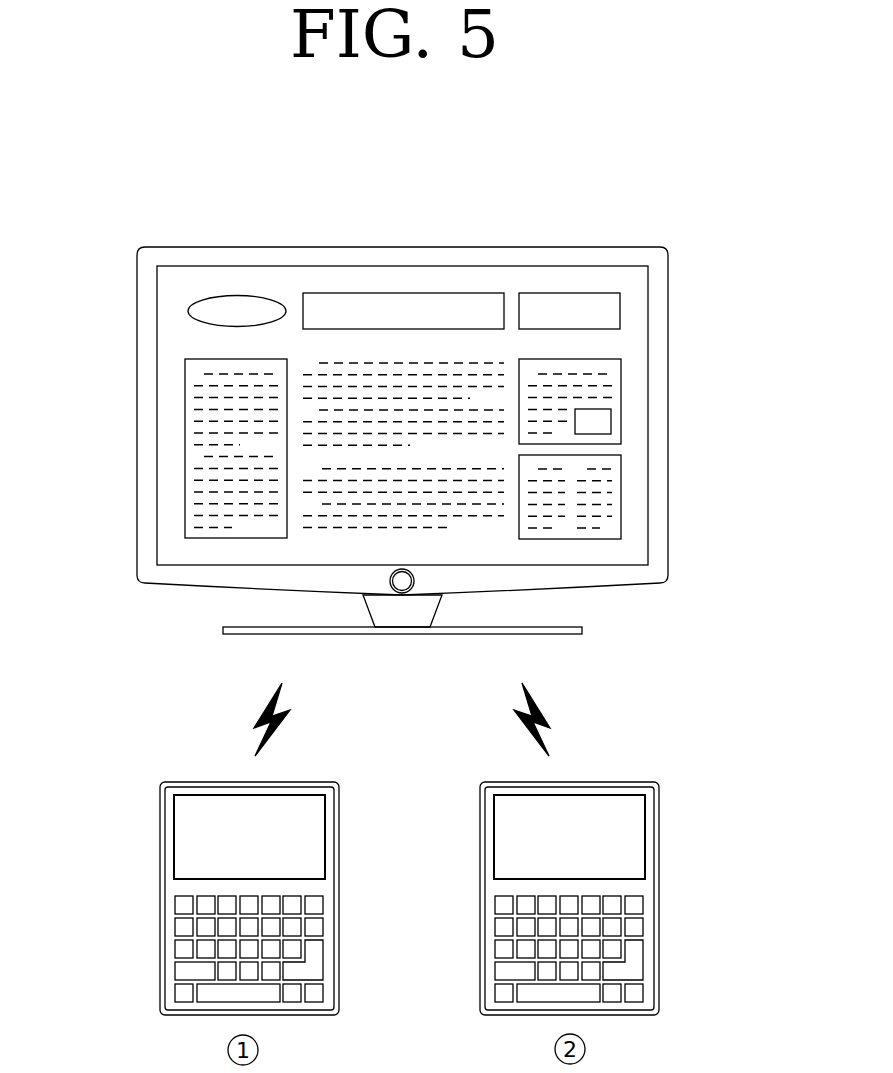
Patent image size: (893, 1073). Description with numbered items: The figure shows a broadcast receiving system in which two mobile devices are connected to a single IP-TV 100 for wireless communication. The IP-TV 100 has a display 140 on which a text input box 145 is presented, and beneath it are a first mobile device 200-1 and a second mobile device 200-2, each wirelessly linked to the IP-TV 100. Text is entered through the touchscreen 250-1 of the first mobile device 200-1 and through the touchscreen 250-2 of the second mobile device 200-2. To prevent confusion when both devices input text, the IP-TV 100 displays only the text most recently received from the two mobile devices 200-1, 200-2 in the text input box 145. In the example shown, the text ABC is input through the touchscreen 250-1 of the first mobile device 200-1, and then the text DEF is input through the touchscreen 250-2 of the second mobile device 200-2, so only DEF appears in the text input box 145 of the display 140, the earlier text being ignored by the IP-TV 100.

The IP-TV 100 is at (334, 247).
The display 140 is at (574, 266).
The text input box 145 is at (463, 292).
The first mobile device 200-1 is at (173, 782).
The second mobile device 200-2 is at (621, 782).
The touchscreen of the first mobile device 250-1 is at (167, 833).
The touchscreen of the second mobile device 250-2 is at (652, 833).